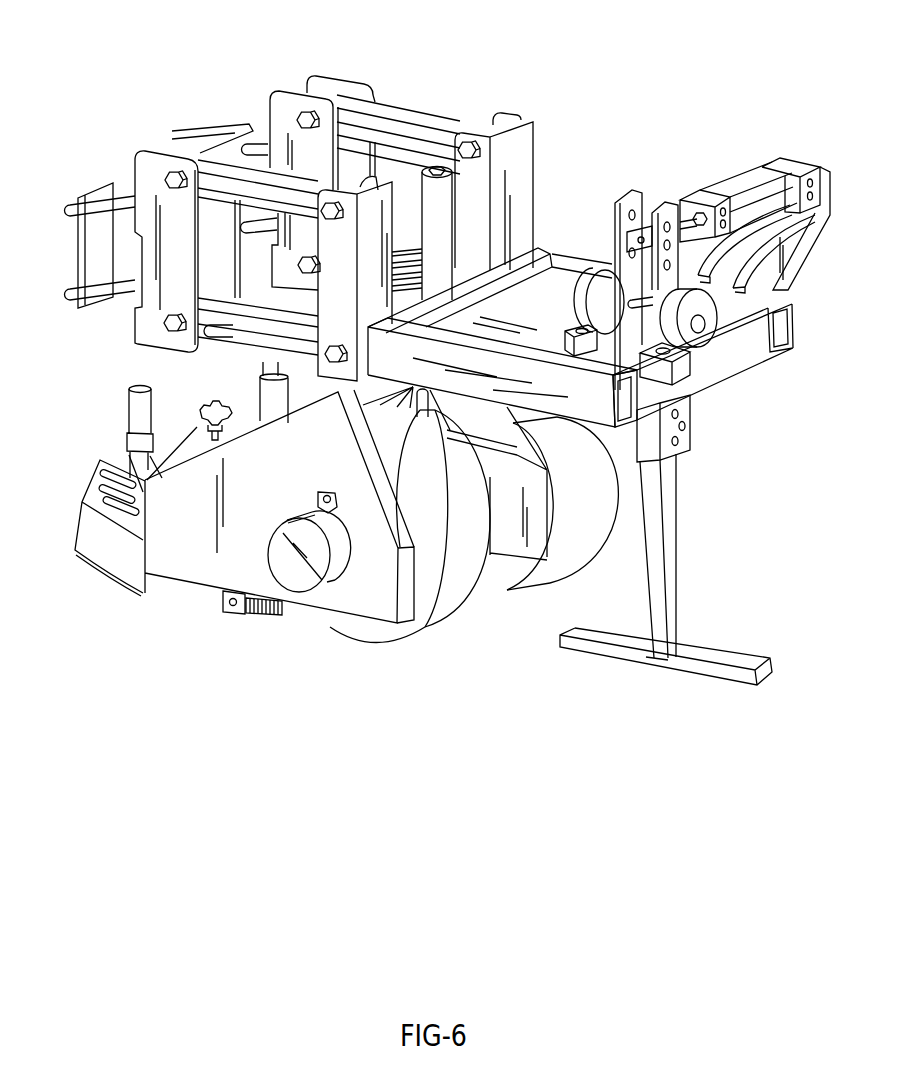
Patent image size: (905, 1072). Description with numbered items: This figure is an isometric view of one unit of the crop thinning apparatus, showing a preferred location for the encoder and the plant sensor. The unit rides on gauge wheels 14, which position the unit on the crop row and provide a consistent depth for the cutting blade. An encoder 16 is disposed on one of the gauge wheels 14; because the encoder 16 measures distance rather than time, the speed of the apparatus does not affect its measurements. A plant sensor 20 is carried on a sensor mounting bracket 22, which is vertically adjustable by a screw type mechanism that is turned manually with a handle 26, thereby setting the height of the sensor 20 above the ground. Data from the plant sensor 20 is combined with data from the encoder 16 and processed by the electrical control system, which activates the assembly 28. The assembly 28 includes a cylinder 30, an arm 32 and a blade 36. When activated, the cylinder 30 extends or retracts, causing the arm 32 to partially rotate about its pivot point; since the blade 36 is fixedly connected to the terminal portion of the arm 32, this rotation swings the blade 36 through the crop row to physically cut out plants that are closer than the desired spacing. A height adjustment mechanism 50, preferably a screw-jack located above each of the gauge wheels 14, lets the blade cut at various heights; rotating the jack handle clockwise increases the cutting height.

The gauge wheels 14 is at (578, 543).
The encoder 16 is at (341, 560).
The plant sensor 20 is at (262, 617).
The sensor mounting bracket 22 is at (223, 610).
The handle 26 is at (208, 405).
The assembly 28 is at (822, 283).
The cylinder 30 is at (748, 180).
The arm 32 is at (665, 508).
The blade 36 is at (702, 662).
The height adjustment mechanism 50 is at (442, 238).